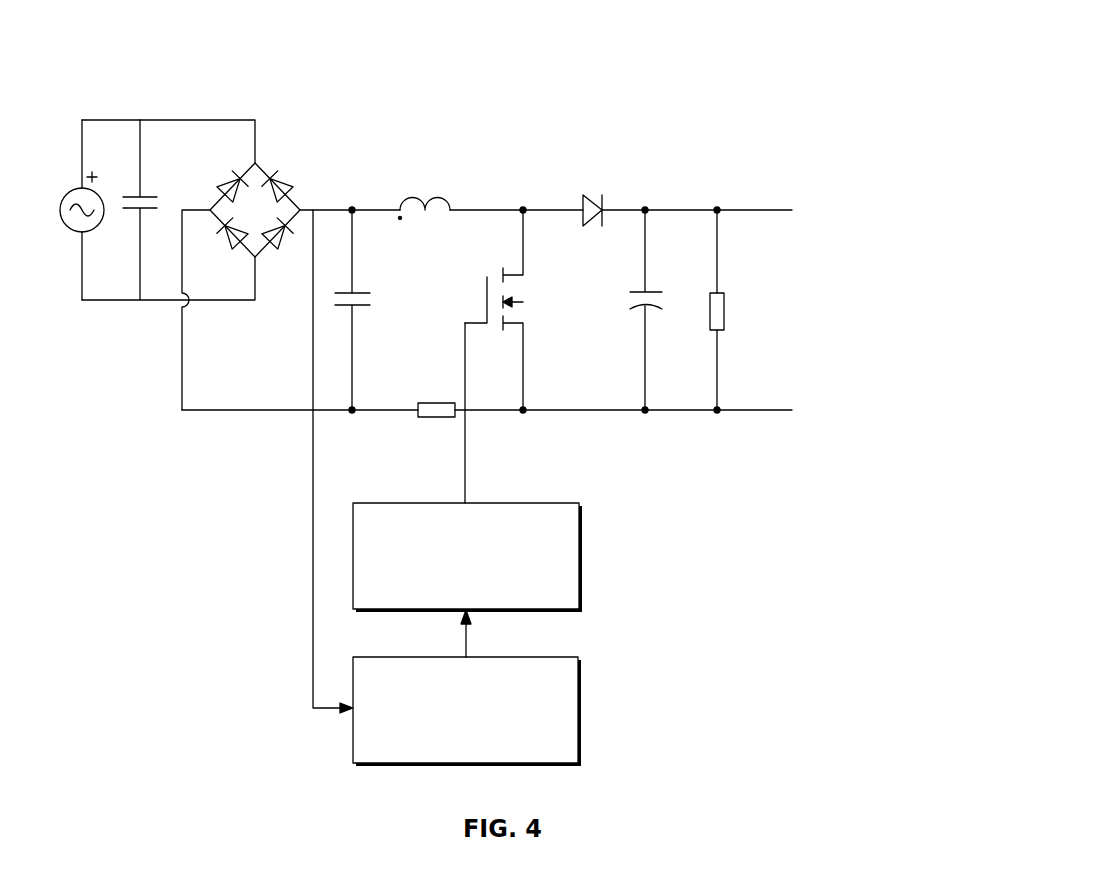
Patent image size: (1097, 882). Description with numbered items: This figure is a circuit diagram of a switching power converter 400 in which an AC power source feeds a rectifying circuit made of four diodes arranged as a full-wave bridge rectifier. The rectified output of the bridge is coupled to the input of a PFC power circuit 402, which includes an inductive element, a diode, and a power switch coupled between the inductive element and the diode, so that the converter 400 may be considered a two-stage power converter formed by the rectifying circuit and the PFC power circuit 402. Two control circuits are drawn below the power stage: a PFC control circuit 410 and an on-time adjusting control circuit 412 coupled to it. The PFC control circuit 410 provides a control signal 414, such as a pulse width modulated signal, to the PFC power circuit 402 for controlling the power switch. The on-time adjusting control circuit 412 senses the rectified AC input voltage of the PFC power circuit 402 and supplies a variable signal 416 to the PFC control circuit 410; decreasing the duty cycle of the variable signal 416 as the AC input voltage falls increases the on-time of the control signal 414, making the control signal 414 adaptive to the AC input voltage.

The switching power converter 400 is at (703, 52).
The PFC power circuit 402 is at (537, 162).
The PFC control circuit 410 is at (420, 503).
The on-time adjusting control circuit 412 is at (420, 657).
The control signal 414 is at (467, 470).
The variable signal 416 is at (467, 645).